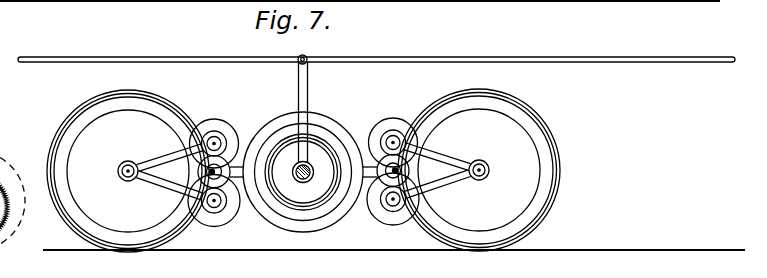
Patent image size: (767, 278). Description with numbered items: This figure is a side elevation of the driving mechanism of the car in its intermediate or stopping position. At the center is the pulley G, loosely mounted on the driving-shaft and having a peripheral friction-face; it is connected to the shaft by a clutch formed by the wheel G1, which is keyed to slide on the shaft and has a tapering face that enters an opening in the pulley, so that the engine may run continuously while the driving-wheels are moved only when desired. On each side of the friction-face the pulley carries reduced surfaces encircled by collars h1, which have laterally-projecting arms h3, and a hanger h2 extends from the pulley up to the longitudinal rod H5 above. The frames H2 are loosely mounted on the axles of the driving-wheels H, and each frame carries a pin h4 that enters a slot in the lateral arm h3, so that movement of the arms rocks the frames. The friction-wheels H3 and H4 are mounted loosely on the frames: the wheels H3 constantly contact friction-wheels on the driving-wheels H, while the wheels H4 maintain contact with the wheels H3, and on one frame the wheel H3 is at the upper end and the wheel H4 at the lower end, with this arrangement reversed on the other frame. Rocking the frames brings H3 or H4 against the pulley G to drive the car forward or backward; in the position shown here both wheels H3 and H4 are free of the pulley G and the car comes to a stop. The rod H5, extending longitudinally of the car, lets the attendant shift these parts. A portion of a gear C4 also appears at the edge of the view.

The driving-wheel H is at (132, 133).
The frame H2 is at (163, 213).
The friction-wheel H3 is at (407, 107).
The friction-wheel H4 is at (226, 113).
The rod H5 is at (362, 81).
The collar h1 is at (281, 129).
The hanger bar h2 is at (299, 86).
The laterally-projecting arm h3 is at (242, 142).
The pin h4 is at (422, 170).
The pulley G is at (335, 124).
The wheel G1 is at (313, 175).
The gear wheel C4 is at (12, 185).